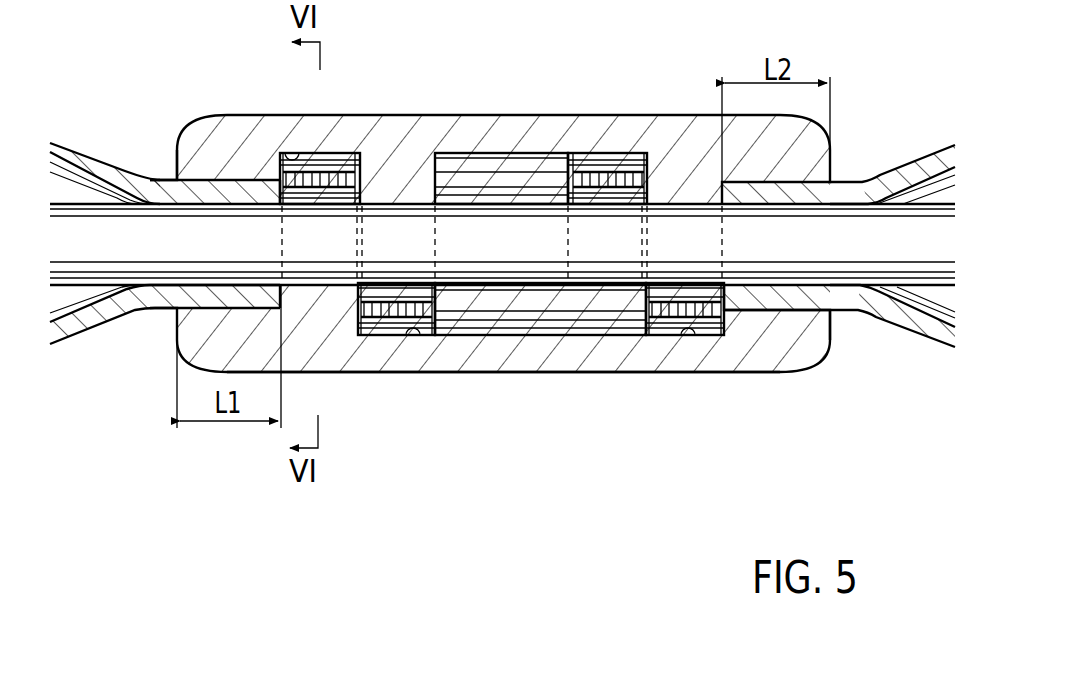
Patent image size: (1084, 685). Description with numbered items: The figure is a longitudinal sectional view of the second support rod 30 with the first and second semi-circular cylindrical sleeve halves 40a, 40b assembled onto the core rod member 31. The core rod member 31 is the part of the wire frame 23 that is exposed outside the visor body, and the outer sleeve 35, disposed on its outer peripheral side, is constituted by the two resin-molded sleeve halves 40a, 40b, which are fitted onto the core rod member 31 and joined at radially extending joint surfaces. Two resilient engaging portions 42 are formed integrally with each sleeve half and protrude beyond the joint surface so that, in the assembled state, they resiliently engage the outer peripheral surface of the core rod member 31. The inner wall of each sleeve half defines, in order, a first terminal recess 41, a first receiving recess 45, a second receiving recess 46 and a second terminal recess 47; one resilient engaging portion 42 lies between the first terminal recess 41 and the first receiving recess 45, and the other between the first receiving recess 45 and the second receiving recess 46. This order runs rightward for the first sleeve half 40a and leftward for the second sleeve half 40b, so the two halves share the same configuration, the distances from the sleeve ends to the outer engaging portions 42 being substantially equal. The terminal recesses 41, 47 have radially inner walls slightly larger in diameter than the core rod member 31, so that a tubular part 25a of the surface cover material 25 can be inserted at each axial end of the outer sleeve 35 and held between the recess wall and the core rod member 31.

The wire frame 23 is at (902, 270).
The surface cover material 25 is at (73, 157).
The tubular part 25a is at (238, 185).
The second support rod 30 is at (483, 452).
The core rod member 31 is at (497, 263).
The outer sleeve 35 is at (553, 374).
The first semi-circular cylindrical sleeve half 40a is at (408, 362).
The second semi-circular cylindrical sleeve half 40b is at (422, 117).
The first terminal recess 41 is at (840, 185).
The resilient engaging portion 42 is at (328, 180).
The first receiving recess 45 is at (557, 165).
The second receiving recess 46 is at (286, 158).
The second terminal recess 47 is at (203, 187).